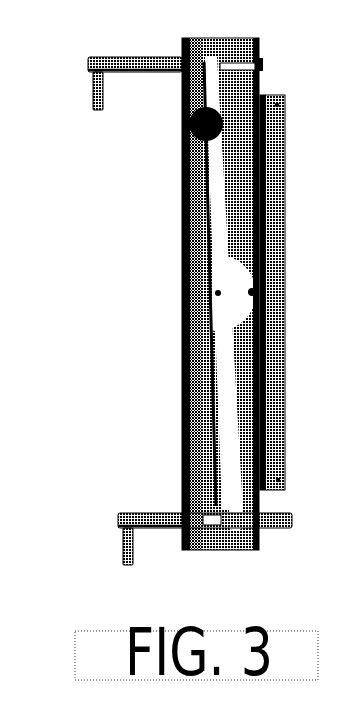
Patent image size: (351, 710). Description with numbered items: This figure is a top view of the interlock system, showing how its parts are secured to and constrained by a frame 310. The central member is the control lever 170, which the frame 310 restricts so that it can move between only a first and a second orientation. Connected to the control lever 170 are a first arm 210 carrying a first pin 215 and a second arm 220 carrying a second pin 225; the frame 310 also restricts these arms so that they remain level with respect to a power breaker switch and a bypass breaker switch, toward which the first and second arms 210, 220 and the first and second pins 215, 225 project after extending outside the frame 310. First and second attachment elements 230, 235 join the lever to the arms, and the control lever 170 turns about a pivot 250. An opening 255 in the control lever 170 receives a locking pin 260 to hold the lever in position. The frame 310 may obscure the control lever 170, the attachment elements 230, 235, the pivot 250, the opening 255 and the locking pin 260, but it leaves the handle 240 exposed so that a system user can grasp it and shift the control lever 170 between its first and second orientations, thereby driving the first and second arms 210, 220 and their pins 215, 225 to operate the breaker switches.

The control lever 170 is at (243, 453).
The first arm 210 is at (138, 57).
The first pin 215 is at (92, 83).
The second arm 220 is at (142, 513).
The second pin 225 is at (122, 537).
The first attachment element 230 is at (207, 55).
The second attachment element 235 is at (234, 530).
The handle 240 is at (188, 124).
The pivot 250 is at (215, 293).
The opening 255 is at (253, 290).
The locking pin 260 is at (254, 296).
The frame 310 is at (182, 332).